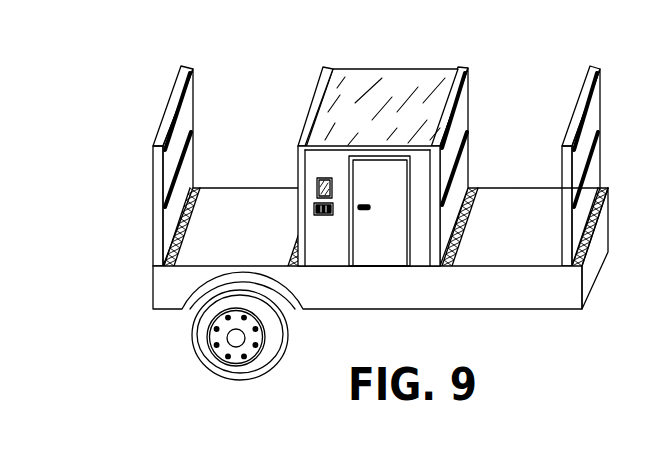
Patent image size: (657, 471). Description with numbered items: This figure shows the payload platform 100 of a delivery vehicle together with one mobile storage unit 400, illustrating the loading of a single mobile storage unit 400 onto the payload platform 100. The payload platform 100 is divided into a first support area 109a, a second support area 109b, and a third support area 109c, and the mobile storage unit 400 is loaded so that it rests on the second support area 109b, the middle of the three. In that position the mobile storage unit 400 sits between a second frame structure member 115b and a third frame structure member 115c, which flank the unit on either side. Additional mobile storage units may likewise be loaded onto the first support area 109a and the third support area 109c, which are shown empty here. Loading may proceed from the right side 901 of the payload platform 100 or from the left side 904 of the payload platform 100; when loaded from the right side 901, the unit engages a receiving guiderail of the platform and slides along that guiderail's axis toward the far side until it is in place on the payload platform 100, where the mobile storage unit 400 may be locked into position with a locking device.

The payload platform 100 is at (357, 204).
The mobile storage unit 400 is at (409, 147).
The second frame structure member 115b is at (467, 104).
The third frame structure member 115c is at (324, 68).
The left side 904 is at (500, 187).
The right side 901 is at (495, 305).
The first support area 109a is at (487, 263).
The second support area 109b is at (392, 267).
The third support area 109c is at (278, 261).